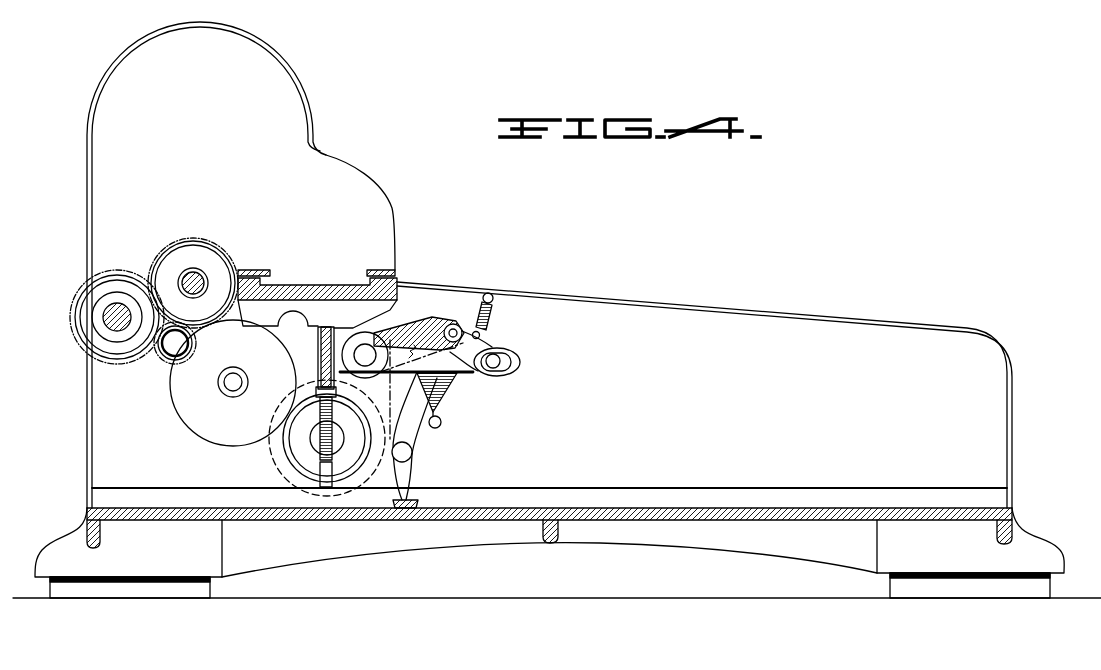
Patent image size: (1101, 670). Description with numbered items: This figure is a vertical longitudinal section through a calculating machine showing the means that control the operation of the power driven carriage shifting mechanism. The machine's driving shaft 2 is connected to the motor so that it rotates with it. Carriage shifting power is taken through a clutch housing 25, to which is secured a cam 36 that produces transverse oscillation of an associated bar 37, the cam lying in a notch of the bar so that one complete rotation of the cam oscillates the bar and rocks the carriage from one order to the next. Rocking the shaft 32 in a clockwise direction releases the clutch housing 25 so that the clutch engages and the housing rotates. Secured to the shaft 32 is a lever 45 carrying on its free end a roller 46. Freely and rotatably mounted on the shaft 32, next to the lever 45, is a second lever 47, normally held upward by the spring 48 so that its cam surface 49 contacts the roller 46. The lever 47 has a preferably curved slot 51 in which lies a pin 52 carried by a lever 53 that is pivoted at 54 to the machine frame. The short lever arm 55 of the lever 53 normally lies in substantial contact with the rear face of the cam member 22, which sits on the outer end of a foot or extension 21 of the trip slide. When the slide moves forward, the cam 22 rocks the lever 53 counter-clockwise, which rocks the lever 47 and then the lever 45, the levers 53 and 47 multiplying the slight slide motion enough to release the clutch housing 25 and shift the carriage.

The driving shaft 2 is at (103, 317).
The foot or extension 21 is at (420, 505).
The cam member 22 is at (420, 497).
The clutch housing 25 is at (273, 458).
The shaft 32 is at (353, 333).
The cam 36 is at (273, 476).
The bar 37 is at (320, 353).
The lever 45 is at (426, 328).
The roller 46 is at (454, 324).
The second lever 47 is at (492, 343).
The spring 48 is at (487, 337).
The cam surface 49 is at (479, 326).
The slot 51 is at (521, 358).
The pin 52 is at (497, 367).
The lever 53 is at (437, 377).
The pivot 54 is at (413, 452).
The short lever arm 55 is at (412, 476).